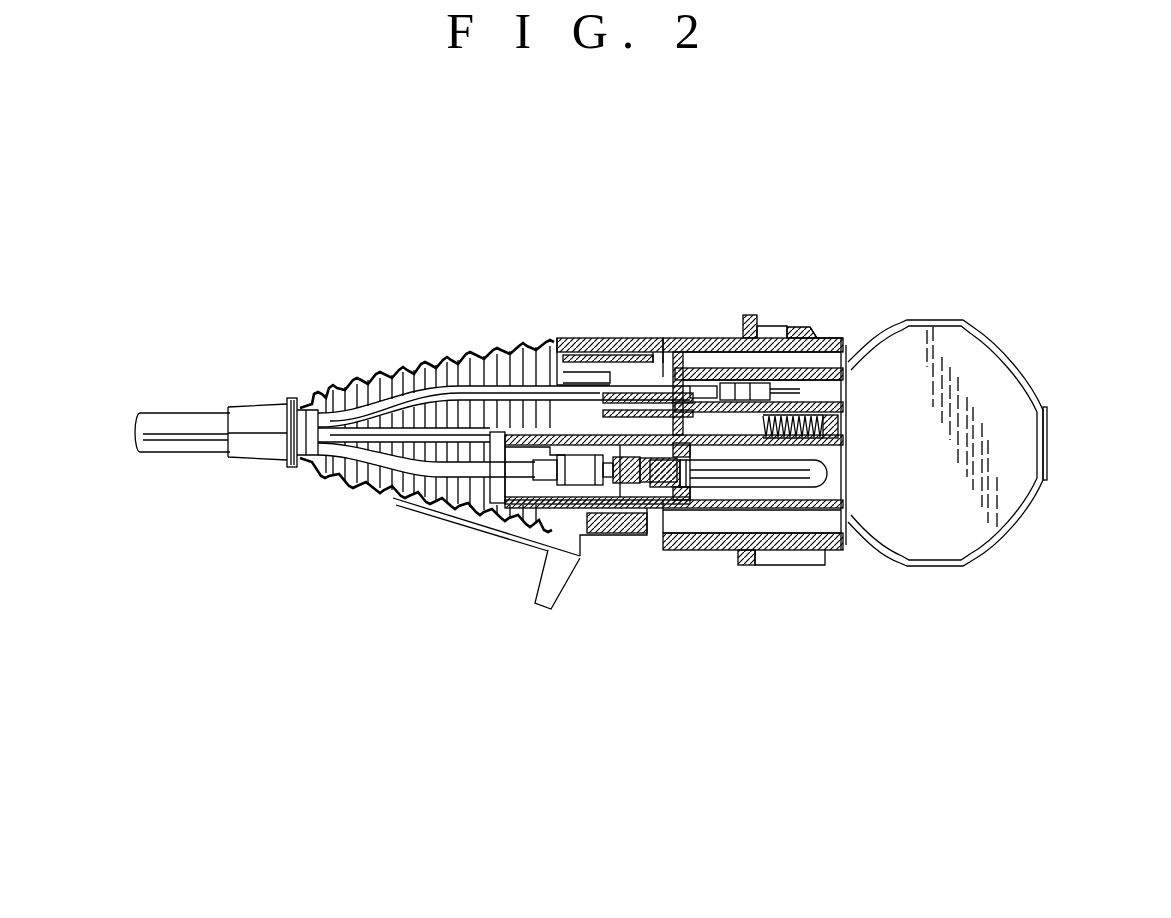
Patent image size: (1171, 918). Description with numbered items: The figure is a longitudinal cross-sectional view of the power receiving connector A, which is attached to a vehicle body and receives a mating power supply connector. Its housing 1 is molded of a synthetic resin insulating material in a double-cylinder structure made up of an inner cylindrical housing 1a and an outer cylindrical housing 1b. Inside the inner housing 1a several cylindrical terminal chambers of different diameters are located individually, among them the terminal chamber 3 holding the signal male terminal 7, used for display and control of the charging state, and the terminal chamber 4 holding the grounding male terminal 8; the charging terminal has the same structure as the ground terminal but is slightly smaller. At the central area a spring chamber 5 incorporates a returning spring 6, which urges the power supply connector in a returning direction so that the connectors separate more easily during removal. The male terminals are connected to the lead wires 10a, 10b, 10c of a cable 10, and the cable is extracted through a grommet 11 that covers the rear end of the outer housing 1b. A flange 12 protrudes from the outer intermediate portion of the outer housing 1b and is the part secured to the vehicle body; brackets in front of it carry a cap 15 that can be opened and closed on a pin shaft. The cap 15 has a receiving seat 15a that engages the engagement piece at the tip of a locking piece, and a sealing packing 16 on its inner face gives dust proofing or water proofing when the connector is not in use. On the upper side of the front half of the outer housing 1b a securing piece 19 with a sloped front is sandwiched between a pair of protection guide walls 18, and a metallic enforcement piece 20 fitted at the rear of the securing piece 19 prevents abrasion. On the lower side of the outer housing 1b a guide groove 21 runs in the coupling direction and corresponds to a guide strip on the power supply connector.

The power receiving connector A is at (661, 382).
The housing 1 is at (690, 338).
The inner cylindrical housing 1a is at (702, 508).
The outer cylindrical housing 1b is at (648, 338).
The terminal chamber 3 is at (848, 392).
The terminal chamber 4 is at (842, 482).
The spring chamber 5 is at (840, 420).
The returning spring 6 is at (840, 427).
The signal male terminal 7 is at (795, 390).
The grounding male terminal 8 is at (778, 480).
The cable 10 is at (178, 423).
The lead wire 10a is at (392, 440).
The lead wire 10b is at (460, 385).
The lead wire 10c is at (432, 465).
The grommet 11 is at (368, 380).
The flange 12 is at (747, 315).
The cap 15 is at (1000, 348).
The receiving seat 15a is at (1048, 442).
The sealing packing 16 is at (993, 490).
The protection guide walls 18 is at (772, 325).
The securing piece 19 is at (825, 335).
The metallic enforcement piece 20 is at (797, 327).
The guide groove 21 is at (820, 560).